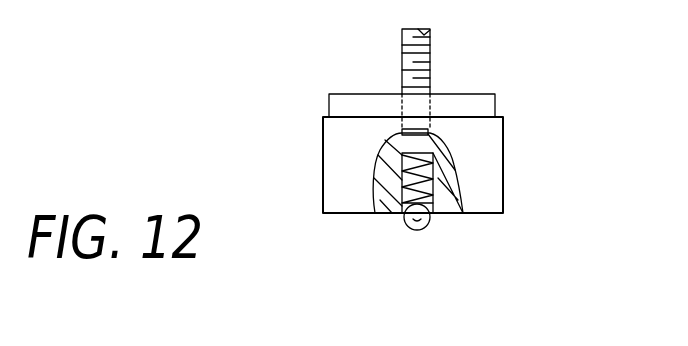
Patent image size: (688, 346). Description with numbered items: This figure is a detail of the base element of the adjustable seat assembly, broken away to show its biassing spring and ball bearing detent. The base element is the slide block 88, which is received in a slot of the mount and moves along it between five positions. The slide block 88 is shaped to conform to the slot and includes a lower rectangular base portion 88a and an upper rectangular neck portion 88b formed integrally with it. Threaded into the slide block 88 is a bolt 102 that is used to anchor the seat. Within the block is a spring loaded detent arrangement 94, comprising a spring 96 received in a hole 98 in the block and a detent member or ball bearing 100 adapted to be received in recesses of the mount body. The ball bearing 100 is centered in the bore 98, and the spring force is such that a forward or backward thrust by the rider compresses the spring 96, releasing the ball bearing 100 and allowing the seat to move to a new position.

The slide block 88 is at (411, 134).
The lower rectangular base portion 88a is at (485, 157).
The upper rectangular neck portion 88b is at (487, 108).
The bolt 102 is at (402, 50).
The spring 96 is at (395, 190).
The hole 98 is at (433, 187).
The ball bearing 100 is at (414, 231).
The spring loaded detent arrangement 94 is at (467, 249).